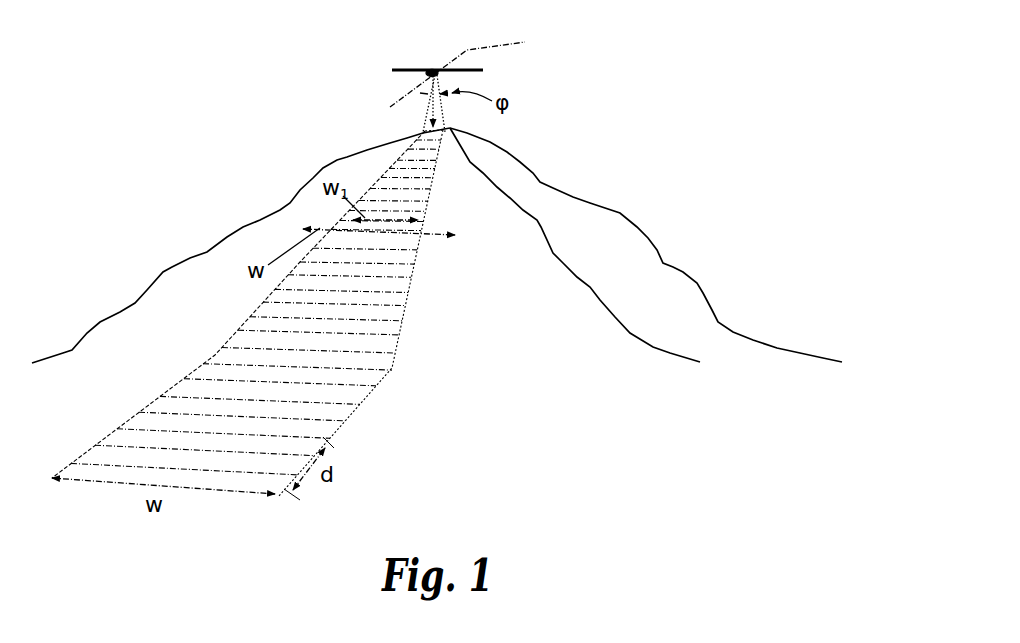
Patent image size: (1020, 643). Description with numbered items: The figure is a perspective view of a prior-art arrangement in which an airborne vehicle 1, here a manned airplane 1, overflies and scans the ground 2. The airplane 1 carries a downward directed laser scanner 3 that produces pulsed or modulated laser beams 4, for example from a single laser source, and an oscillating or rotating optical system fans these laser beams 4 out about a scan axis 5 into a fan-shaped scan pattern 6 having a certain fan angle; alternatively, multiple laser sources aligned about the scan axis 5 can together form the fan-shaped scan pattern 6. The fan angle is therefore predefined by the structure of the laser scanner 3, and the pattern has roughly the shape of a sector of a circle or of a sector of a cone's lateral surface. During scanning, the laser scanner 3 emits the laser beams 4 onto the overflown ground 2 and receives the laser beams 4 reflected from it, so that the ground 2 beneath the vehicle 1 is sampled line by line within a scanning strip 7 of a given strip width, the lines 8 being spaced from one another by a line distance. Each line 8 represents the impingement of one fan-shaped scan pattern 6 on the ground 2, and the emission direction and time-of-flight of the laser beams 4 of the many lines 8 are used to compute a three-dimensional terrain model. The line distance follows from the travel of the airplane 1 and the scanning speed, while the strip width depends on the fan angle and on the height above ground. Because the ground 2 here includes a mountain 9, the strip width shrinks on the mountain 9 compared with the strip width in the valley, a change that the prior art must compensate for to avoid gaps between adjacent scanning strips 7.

The vehicle 1 is at (444, 70).
The ground 2 is at (513, 375).
The laser scanner 3 is at (410, 78).
The laser beams 4 is at (430, 115).
The scan axis 5 is at (468, 68).
The fan-shaped scan pattern 6 is at (443, 80).
The scanning strip 7 is at (100, 510).
The lines 8 is at (120, 467).
The mountain 9 is at (640, 177).